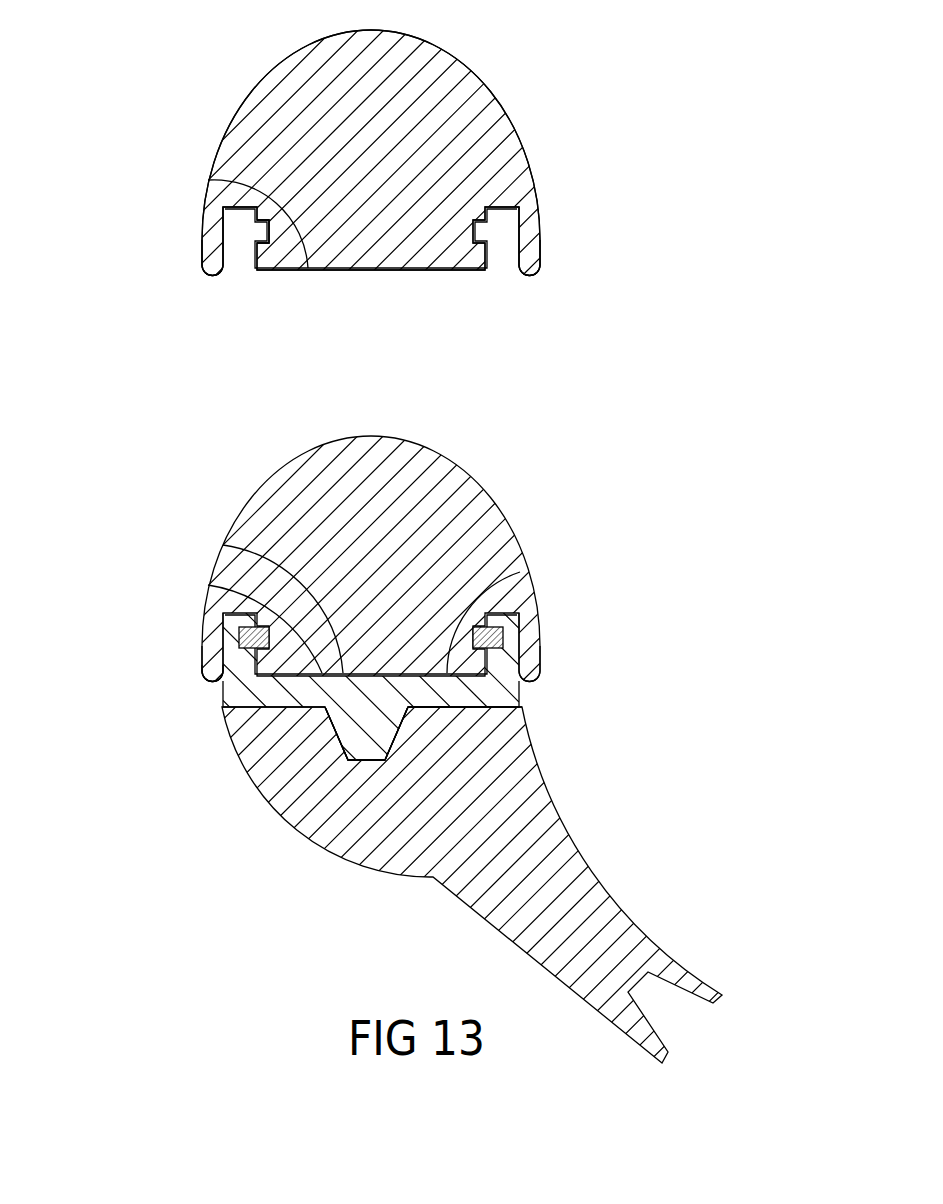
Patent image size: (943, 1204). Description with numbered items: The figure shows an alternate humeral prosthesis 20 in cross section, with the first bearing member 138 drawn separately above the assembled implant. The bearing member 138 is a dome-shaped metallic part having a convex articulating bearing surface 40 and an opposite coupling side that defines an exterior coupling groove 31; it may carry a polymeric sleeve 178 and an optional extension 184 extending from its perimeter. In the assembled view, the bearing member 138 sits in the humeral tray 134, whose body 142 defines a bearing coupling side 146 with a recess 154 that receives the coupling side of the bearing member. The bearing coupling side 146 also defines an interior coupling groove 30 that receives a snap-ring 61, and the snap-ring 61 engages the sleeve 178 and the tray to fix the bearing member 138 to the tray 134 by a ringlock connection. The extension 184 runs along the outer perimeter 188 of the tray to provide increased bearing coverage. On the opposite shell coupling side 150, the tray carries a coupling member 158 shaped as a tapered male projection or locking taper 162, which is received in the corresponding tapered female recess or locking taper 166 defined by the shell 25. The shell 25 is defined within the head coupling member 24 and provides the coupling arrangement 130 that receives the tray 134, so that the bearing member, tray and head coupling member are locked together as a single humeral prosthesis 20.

The humeral prosthesis 20 is at (103, 148).
The articulating bearing surface 40 is at (413, 33).
The first bearing member 138 is at (468, 133).
The polymeric sleeve 178 is at (208, 180).
The extension 184 is at (533, 240).
The exterior coupling groove 31 is at (255, 235).
The body 142 is at (372, 271).
The bearing coupling side 146 is at (520, 572).
The recess 154 is at (208, 585).
The snap-ring 61 is at (239, 633).
The interior coupling groove 30 is at (230, 640).
The humeral tray 134 is at (222, 686).
The outer perimeter 188 is at (522, 688).
The coupling member 158 is at (367, 725).
The locking taper 162 is at (340, 752).
The coupling arrangement 130 is at (320, 765).
The head coupling member 24 is at (538, 812).
The shell 25 is at (498, 728).
The shell coupling side 150 is at (397, 737).
The locking taper 166 is at (460, 708).